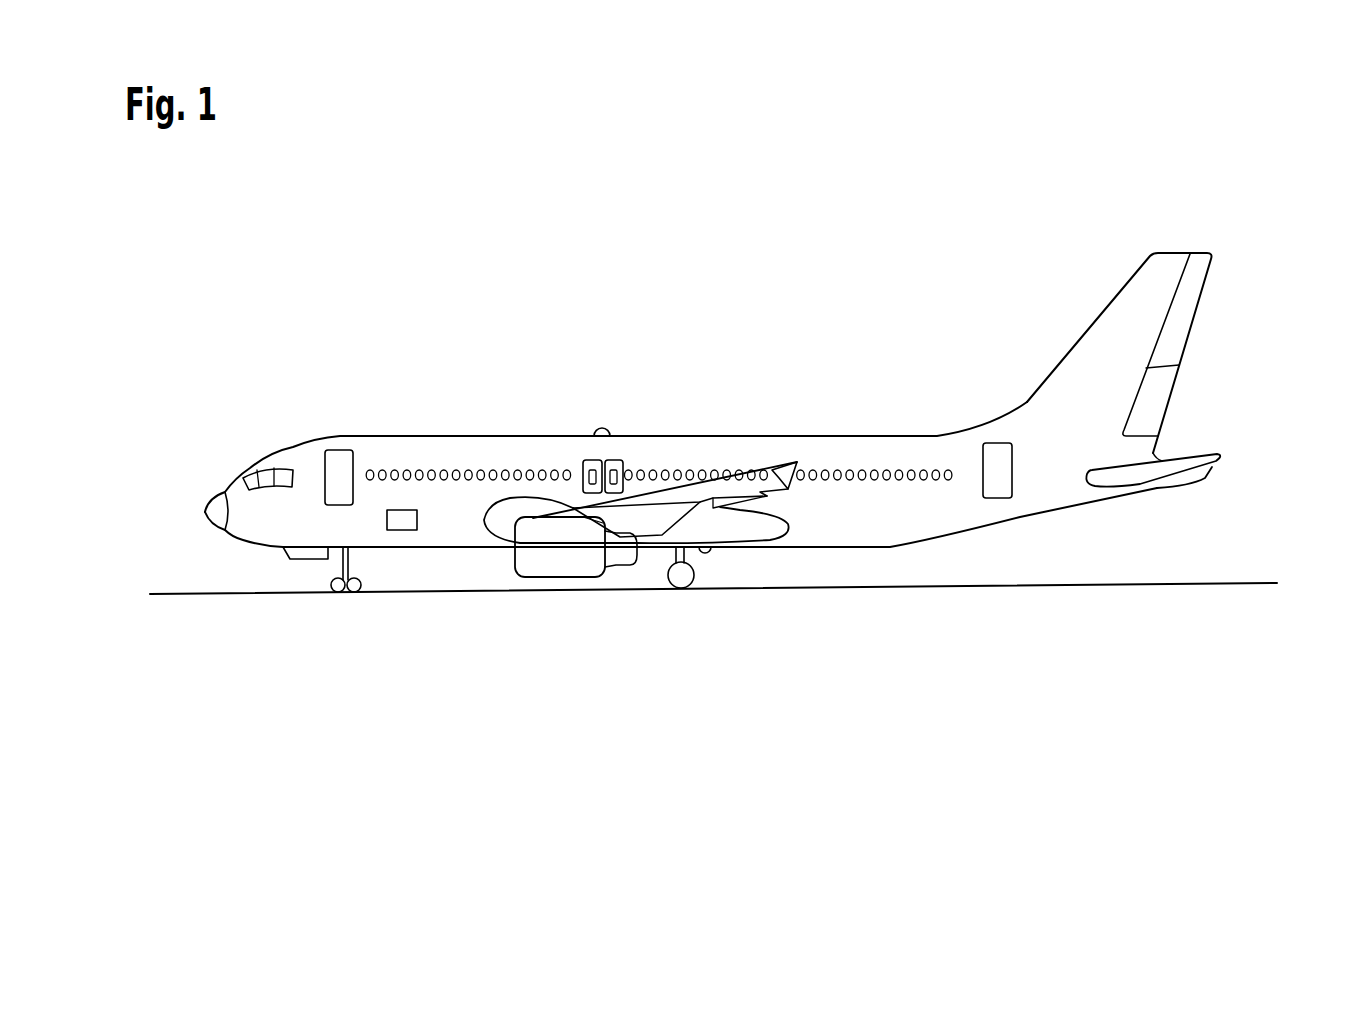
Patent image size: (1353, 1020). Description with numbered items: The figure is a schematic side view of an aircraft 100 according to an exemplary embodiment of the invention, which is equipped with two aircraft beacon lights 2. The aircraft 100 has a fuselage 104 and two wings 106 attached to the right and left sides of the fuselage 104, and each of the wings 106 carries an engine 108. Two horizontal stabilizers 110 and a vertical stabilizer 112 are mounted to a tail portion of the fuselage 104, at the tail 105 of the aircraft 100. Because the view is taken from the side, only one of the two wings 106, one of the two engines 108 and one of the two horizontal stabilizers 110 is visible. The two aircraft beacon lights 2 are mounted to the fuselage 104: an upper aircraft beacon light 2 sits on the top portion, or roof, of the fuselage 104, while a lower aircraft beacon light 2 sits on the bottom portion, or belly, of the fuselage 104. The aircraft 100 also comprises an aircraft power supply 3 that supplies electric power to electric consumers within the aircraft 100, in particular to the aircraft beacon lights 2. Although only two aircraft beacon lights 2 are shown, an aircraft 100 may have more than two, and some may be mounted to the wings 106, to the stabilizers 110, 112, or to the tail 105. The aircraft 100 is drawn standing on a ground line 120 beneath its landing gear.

The aircraft 100 is at (560, 286).
The aircraft beacon light 2 is at (609, 431).
The aircraft power supply 3 is at (403, 521).
The fuselage 104 is at (862, 453).
The tail 105 is at (1210, 483).
The wing 106 is at (692, 500).
The engine 108 is at (560, 552).
The horizontal stabilizer 110 is at (1183, 462).
The vertical stabilizer 112 is at (1148, 290).
The ground 120 is at (980, 588).